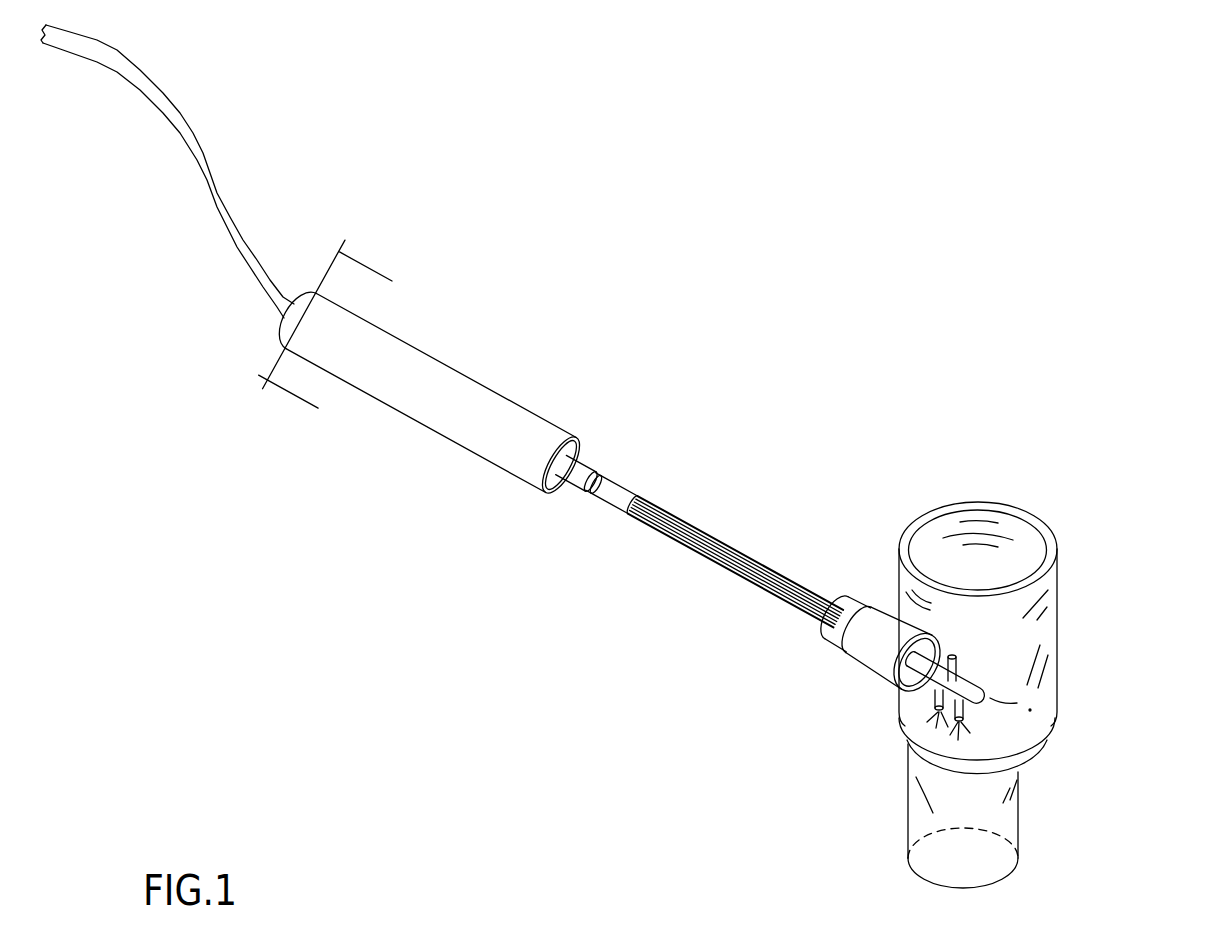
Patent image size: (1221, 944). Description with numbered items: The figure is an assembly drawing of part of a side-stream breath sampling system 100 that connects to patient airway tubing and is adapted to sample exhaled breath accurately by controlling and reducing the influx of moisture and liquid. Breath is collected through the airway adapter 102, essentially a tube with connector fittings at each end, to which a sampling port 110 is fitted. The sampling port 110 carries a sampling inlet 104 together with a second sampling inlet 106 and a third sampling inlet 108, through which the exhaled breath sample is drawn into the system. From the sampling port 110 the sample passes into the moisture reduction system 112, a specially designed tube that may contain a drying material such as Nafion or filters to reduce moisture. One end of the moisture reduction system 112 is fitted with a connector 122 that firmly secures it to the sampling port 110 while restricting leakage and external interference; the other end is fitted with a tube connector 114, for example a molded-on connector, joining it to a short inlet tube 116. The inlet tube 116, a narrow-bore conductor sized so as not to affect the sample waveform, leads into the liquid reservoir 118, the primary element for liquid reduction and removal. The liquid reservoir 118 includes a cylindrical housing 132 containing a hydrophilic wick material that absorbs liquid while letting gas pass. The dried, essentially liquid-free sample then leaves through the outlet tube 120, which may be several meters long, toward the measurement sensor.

The sampling system 100 is at (881, 230).
The airway adapter 102 is at (1083, 660).
The sampling inlet 104 is at (965, 703).
The second sampling inlet 106 is at (961, 651).
The third sampling inlet 108 is at (935, 702).
The sampling port 110 is at (912, 675).
The moisture reduction system 112 is at (743, 520).
The tube connector 114 is at (646, 468).
The inlet tube 116 is at (586, 461).
The liquid reservoir 118 is at (425, 313).
The outlet tube 120 is at (210, 93).
The connector 122 is at (843, 667).
The housing 132 is at (476, 357).